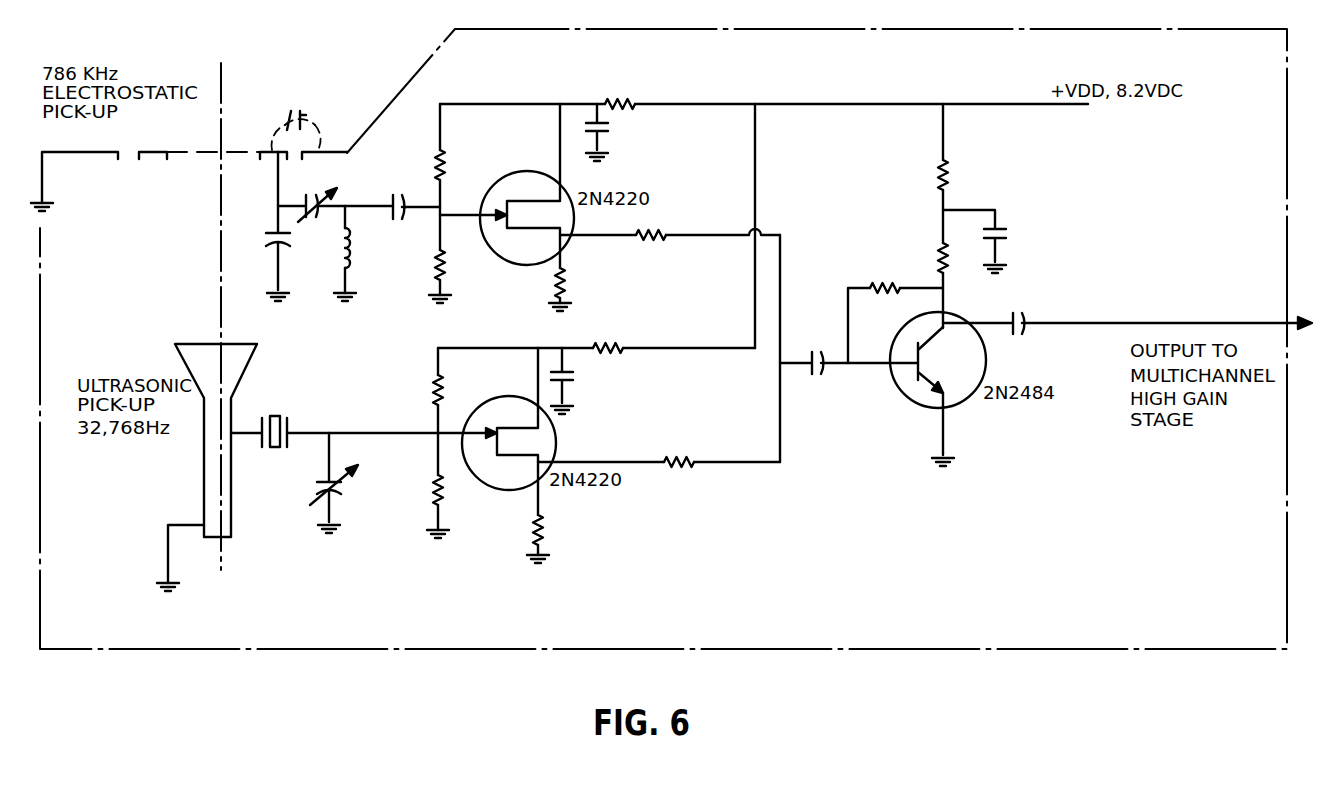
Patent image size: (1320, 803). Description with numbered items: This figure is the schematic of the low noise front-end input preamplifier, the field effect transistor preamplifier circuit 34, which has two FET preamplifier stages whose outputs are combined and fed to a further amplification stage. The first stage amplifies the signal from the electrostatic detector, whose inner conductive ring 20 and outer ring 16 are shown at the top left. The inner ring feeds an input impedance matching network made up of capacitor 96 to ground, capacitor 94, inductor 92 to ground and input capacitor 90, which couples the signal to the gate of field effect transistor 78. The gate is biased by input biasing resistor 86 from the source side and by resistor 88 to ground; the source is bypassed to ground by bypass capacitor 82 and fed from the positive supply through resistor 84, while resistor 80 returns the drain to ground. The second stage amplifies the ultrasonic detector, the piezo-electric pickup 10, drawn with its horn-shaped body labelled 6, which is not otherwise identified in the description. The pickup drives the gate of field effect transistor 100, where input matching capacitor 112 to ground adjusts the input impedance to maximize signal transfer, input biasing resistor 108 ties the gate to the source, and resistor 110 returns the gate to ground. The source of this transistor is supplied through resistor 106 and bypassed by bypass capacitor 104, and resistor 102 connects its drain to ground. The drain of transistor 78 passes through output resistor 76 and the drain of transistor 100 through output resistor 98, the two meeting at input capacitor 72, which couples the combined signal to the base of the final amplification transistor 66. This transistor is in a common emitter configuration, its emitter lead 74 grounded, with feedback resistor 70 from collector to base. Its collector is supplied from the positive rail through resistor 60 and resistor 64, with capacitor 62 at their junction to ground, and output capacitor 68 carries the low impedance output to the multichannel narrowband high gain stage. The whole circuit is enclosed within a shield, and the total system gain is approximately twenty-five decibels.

The ultrasonic pick-up horn 6 is at (232, 480).
The piezo-electric pickup 10 is at (273, 415).
The outer ring 16 is at (72, 152).
The inner conductive ring 20 is at (160, 153).
The field effect transistor preamplifier circuit 34 is at (248, 649).
The resistor 60 is at (936, 172).
The capacitor 62 is at (1014, 213).
The resistor 64 is at (938, 253).
The final amplification transistor 66 is at (964, 322).
The output capacitor 68 is at (1024, 322).
The feedback resistor 70 is at (873, 281).
The input capacitor 72 is at (826, 353).
The emitter lead 74 is at (946, 453).
The output resistor 76 is at (660, 240).
The field effect transistor 78 is at (504, 174).
The resistor 80 is at (566, 280).
The bypass capacitor 82 is at (602, 124).
The resistor 84 is at (639, 80).
The input biasing resistor 86 is at (443, 165).
The resistor 88 is at (443, 262).
The input capacitor 90 is at (410, 198).
The inductor 92 is at (354, 242).
The capacitor 94 is at (322, 186).
The capacitor 96 is at (276, 230).
The output resistor 98 is at (697, 445).
The field effect transistor 100 is at (557, 443).
The resistor 102 is at (545, 522).
The bypass capacitor 104 is at (572, 377).
The resistor 106 is at (604, 340).
The input biasing resistor 108 is at (443, 380).
The resistor 110 is at (443, 490).
The input matching capacitor 112 is at (353, 483).